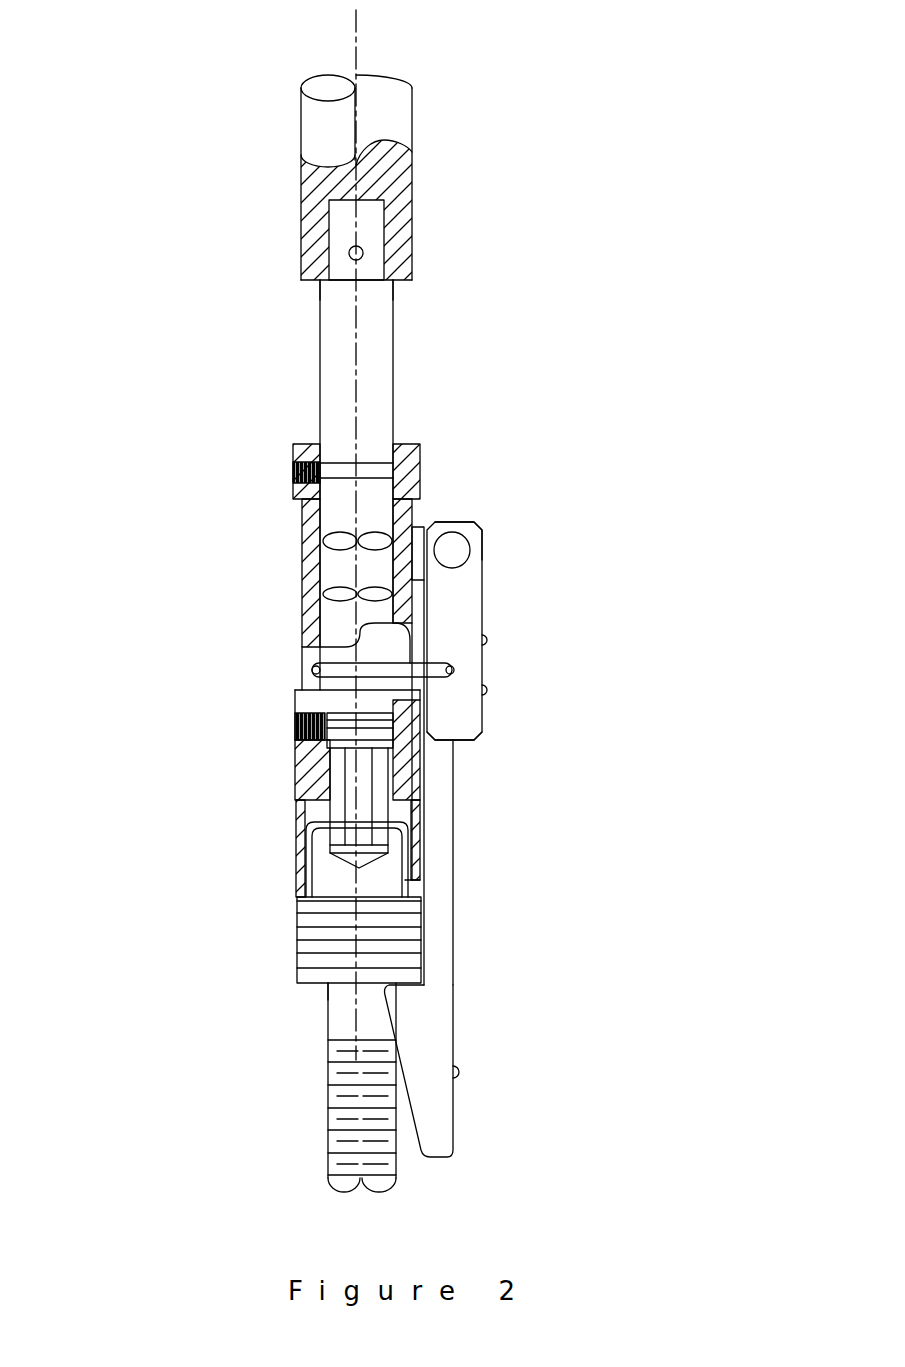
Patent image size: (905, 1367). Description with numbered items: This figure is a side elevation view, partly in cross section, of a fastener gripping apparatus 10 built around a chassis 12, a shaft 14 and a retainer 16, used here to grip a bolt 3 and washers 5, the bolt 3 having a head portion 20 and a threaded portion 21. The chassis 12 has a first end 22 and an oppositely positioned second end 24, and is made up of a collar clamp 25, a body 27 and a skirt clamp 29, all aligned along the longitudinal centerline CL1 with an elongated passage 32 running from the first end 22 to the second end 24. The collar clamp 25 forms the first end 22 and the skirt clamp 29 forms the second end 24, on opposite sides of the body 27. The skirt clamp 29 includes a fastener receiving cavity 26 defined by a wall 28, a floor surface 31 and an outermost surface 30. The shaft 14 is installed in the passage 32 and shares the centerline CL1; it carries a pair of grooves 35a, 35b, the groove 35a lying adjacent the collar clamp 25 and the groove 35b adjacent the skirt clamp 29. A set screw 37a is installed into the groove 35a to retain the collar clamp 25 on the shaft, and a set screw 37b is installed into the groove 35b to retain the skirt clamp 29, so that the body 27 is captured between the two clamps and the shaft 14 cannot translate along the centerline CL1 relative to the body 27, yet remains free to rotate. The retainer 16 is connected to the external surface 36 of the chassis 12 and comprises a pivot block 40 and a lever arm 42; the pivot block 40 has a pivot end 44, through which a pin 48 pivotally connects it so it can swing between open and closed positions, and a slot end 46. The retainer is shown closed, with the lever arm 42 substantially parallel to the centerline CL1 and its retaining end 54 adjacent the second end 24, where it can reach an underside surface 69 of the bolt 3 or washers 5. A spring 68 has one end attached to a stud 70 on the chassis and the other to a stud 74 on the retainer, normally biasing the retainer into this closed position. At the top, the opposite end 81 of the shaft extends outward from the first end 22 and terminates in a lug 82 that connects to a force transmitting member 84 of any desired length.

The longitudinal centerline CL1 is at (355, 40).
The fastener gripping apparatus 10 is at (564, 121).
The force transmitting member 84 is at (300, 124).
The lug 82 is at (342, 230).
The opposite end of the shaft 81 is at (320, 310).
The shaft 14 is at (393, 342).
The first end 22 is at (543, 428).
The collar clamp 25 is at (413, 443).
The groove 35a is at (347, 460).
The set screw 37a is at (293, 468).
The chassis 12 is at (155, 627).
The external surface 36 is at (413, 513).
The elongated passage 32 is at (347, 577).
The body 27 is at (322, 600).
The spring 68 is at (347, 667).
The stud 70 is at (312, 670).
The second end 24 is at (155, 821).
The groove 35b is at (347, 727).
The set screw 37b is at (297, 732).
The skirt clamp 29 is at (297, 775).
The floor surface 31 is at (298, 827).
The head portion 20 is at (320, 853).
The outermost surface 30 is at (300, 888).
The fastener receiving cavity 26 is at (402, 810).
The wall 28 is at (415, 845).
The washers 5 is at (298, 946).
The underside surface 69 is at (330, 987).
The bolt 3 is at (328, 1027).
The threaded portion 21 is at (328, 1090).
The retainer 16 is at (546, 782).
The pivot end 44 is at (473, 522).
The pin 48 is at (452, 550).
The pivot block 40 is at (482, 590).
The stud 74 is at (452, 670).
The slot end 46 is at (482, 737).
The lever arm 42 is at (455, 892).
The retaining end 54 is at (455, 1035).